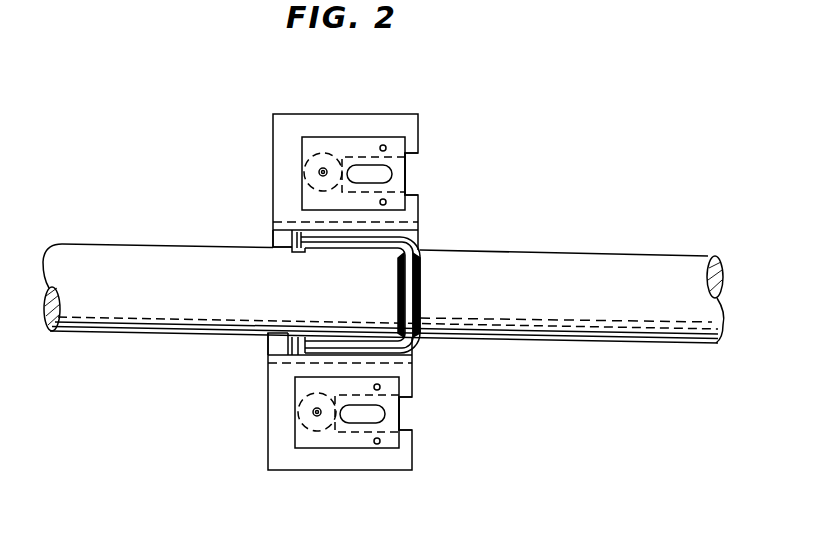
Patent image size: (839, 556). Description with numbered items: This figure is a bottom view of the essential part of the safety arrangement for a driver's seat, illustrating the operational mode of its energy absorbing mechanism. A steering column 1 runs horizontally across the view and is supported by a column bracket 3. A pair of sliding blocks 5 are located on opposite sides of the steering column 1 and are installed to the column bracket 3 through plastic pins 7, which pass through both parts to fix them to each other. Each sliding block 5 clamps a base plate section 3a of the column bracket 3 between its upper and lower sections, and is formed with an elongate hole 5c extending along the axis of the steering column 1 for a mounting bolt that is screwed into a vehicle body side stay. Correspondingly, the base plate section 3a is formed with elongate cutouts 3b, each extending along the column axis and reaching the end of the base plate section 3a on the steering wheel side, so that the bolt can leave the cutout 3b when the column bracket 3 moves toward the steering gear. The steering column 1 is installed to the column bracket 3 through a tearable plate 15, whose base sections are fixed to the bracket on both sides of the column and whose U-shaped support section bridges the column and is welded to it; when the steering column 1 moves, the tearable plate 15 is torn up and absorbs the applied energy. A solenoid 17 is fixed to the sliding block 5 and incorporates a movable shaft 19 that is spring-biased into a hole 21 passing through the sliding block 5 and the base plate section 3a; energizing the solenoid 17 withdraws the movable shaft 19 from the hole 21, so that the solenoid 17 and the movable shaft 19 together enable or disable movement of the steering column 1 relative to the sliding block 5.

The steering column 1 is at (383, 269).
The column bracket 3 is at (400, 113).
The base plate section 3a is at (276, 116).
The elongate cutout 3b is at (410, 167).
The sliding block 5 is at (348, 136).
The elongate hole 5c is at (392, 174).
The plastic pin 7 is at (387, 148).
The tearable plate 15 is at (448, 338).
The solenoid 17 is at (306, 158).
The movable shaft 19 is at (320, 175).
The hole 21 is at (321, 166).